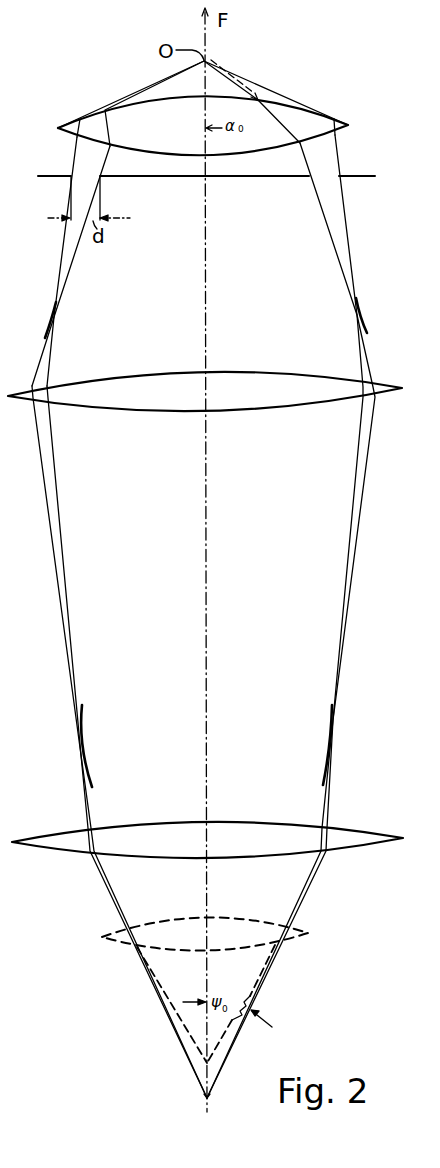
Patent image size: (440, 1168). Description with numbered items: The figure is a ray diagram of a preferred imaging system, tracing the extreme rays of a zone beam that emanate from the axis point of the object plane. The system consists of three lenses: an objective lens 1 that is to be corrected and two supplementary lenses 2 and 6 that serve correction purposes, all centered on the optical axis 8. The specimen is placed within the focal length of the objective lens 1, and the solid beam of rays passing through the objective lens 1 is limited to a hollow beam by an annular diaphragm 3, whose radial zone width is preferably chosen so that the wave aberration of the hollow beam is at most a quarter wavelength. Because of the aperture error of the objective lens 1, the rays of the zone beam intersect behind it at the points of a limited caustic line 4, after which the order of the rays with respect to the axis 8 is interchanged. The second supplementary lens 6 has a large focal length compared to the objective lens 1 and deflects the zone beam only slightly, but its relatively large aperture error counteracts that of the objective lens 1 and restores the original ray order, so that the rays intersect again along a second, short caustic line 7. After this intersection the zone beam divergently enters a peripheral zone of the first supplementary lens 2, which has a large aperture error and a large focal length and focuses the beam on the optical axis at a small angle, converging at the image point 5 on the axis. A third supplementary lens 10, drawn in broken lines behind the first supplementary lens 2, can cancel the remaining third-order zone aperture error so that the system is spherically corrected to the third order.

The objective lens 1 is at (338, 120).
The first supplementary lens 2 is at (370, 837).
The annular diaphragm 3 is at (363, 175).
The caustic line 4 is at (360, 303).
The focal point 5 is at (210, 1097).
The second supplementary lens 6 is at (352, 390).
The second caustic line 7 is at (336, 708).
The optical axis 8 is at (208, 631).
The third supplementary lens 10 is at (300, 936).